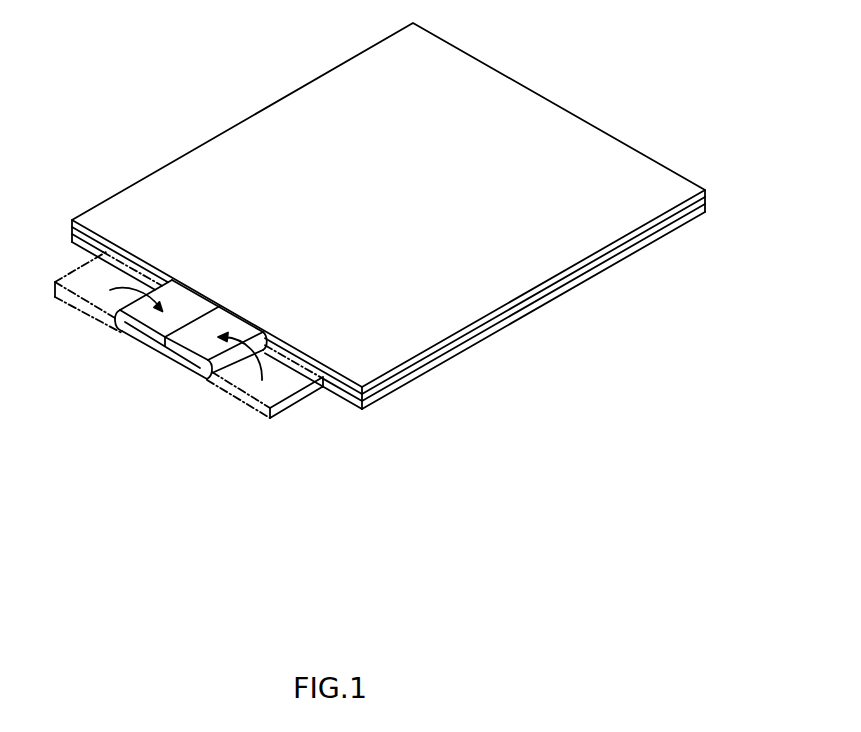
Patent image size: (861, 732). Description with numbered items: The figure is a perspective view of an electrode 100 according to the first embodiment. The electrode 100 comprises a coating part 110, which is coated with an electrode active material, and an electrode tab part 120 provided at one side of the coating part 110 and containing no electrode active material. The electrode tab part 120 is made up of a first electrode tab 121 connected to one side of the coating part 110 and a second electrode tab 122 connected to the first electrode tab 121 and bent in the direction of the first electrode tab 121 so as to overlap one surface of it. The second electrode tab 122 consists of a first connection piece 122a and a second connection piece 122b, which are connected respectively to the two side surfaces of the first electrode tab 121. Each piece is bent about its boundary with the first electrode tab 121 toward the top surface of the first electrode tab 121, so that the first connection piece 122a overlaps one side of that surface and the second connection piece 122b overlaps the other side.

The electrode 100 is at (366, 273).
The coating part 110 is at (532, 298).
The electrode tab part 120 is at (175, 392).
The first electrode tab 121 is at (188, 366).
The second electrode tab 122 is at (147, 372).
The first connection piece 122a is at (125, 323).
The second connection piece 122b is at (180, 350).